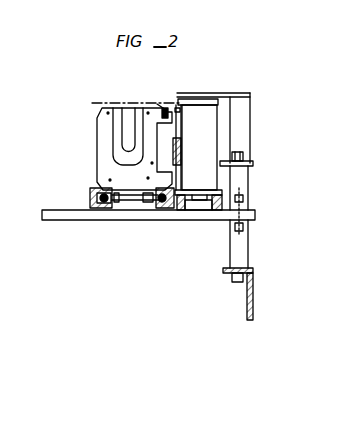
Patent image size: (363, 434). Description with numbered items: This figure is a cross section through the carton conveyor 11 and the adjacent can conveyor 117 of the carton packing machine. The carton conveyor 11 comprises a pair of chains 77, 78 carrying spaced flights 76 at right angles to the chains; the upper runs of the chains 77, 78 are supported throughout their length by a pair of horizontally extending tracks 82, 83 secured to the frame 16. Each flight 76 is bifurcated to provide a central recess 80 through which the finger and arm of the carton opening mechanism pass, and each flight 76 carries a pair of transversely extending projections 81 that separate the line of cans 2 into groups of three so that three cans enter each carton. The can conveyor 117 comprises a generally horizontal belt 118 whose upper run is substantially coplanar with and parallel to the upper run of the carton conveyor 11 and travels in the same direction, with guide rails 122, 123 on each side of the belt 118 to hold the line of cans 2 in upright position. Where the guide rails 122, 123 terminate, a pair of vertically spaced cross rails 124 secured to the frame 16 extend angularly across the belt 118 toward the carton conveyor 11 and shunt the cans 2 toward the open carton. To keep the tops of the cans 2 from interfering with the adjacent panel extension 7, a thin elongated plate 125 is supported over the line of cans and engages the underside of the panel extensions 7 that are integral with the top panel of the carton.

The cans 2 is at (207, 134).
The panel extensions 7 is at (162, 103).
The carton conveyor 11 is at (139, 221).
The frame 16 is at (253, 305).
The flight 76 is at (111, 148).
The chain 77 is at (90, 197).
The chain 78 is at (146, 211).
The central recess 80 is at (128, 117).
The transversely extending projections 81 is at (161, 106).
The track 82 is at (100, 211).
The track 83 is at (165, 209).
The can conveyor 117 is at (202, 209).
The belt 118 is at (222, 193).
The guide rail 122 is at (181, 146).
The guide rail 123 is at (243, 154).
The cross rails 124 is at (216, 104).
The plate 125 is at (195, 98).